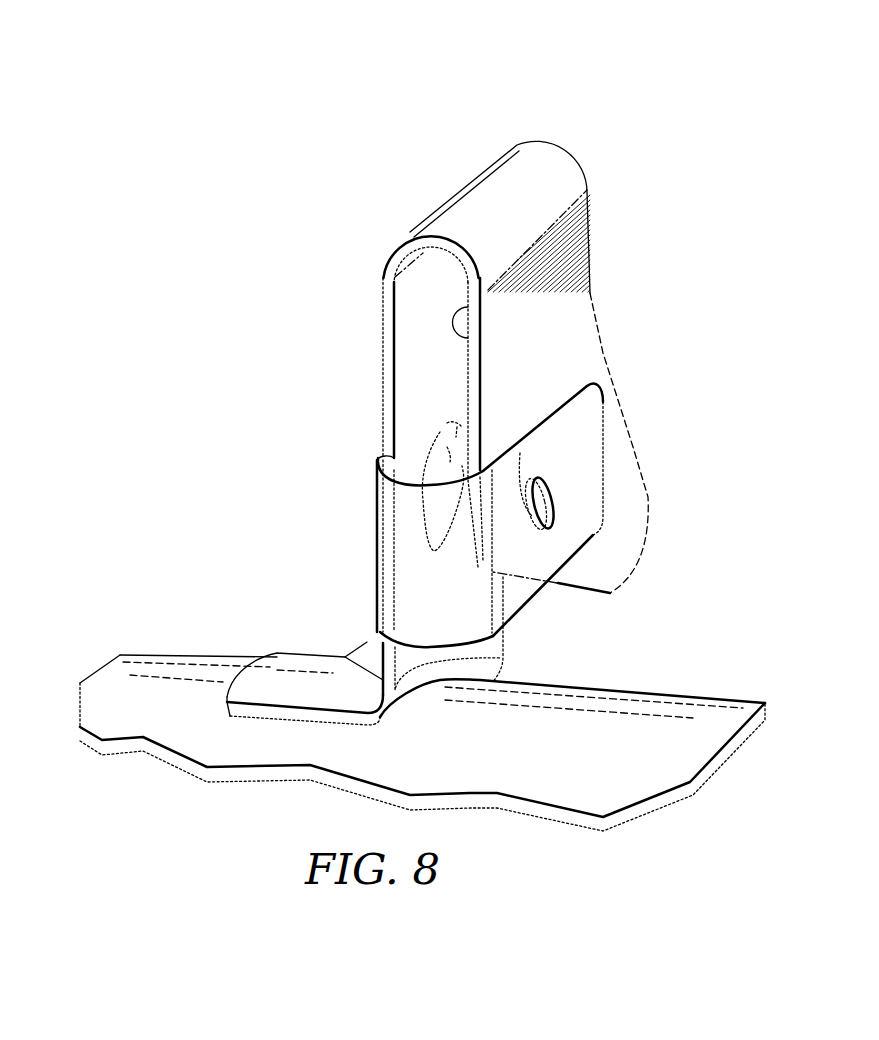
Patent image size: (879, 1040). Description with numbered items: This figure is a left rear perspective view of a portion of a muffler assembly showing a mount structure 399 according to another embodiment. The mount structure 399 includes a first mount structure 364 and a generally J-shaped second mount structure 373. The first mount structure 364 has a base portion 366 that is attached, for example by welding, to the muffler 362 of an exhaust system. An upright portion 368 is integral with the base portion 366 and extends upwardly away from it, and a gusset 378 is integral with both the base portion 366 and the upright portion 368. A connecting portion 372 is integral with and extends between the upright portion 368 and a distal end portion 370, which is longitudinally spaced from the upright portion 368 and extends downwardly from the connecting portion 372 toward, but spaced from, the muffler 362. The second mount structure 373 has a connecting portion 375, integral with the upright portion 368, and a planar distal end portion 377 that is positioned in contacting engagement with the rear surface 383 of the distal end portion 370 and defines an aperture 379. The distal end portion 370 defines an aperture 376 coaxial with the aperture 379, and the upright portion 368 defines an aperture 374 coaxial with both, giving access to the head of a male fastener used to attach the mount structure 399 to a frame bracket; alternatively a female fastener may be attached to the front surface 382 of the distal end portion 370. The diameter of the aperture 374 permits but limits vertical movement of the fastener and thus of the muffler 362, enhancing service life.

The mount structure 399 is at (343, 66).
The first mount structure 364 is at (597, 105).
The connecting portion 372 is at (457, 178).
The distal end portion 370 is at (598, 252).
The front surface 382 is at (484, 320).
The rear surface 383 is at (588, 353).
The upright portion 368 is at (373, 347).
The aperture 374 is at (452, 443).
The aperture 376 is at (530, 427).
The aperture 379 is at (557, 492).
The distal end portion 377 is at (588, 475).
The second mount structure 373 is at (358, 523).
The connecting portion 375 is at (407, 565).
The gusset 378 is at (367, 642).
The base portion 366 is at (308, 698).
The muffler 362 is at (683, 697).